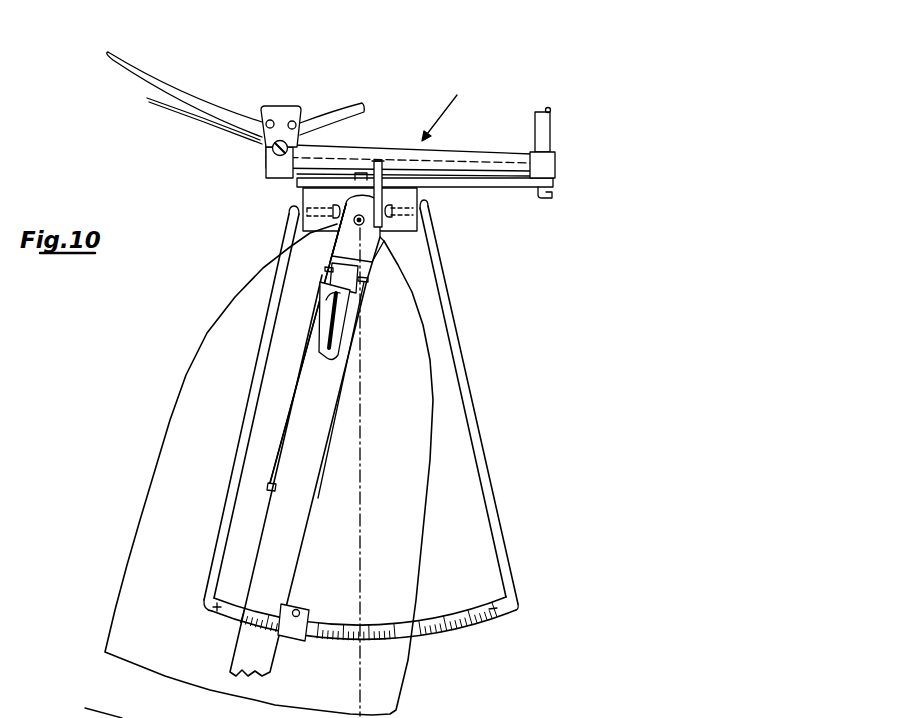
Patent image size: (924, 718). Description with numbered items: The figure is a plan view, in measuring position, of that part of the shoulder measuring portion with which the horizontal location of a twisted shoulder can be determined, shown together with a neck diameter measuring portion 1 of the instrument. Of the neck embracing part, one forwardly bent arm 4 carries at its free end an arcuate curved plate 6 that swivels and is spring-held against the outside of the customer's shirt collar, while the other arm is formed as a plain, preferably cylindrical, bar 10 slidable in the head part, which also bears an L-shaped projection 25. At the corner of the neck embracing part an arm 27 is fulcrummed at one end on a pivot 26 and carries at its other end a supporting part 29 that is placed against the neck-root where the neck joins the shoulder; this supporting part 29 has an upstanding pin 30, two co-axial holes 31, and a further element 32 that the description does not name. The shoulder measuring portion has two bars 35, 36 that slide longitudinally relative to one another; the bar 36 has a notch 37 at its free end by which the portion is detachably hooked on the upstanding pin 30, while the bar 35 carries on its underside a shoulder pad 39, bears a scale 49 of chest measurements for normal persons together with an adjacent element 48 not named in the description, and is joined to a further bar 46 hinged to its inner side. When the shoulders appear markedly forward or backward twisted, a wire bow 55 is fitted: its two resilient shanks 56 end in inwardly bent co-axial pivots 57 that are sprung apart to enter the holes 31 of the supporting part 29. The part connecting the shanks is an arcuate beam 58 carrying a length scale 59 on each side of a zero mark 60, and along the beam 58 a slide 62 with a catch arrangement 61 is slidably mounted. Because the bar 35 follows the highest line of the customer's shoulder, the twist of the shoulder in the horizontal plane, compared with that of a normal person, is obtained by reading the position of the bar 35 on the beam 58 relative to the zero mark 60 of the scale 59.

The neck diameter measuring portion 1 is at (448, 105).
The forwardly bent arm 4 is at (470, 152).
The arcuate curved plate 6 is at (320, 117).
The plain bar 10 is at (548, 133).
The L-shaped projection 25 is at (273, 106).
The pivot 26 is at (552, 198).
The arm 27 is at (522, 188).
The supporting part 29 is at (313, 200).
The upstanding pin 30 is at (372, 240).
The co-axial holes 31 is at (327, 228).
The pivot 32 is at (366, 224).
The bar 35 is at (275, 502).
The bar 36 is at (362, 258).
The notch 37 is at (362, 216).
The shoulder pad 39 is at (162, 630).
The bar 46 is at (333, 331).
The guide strip 48 is at (232, 343).
The scale 49 is at (293, 393).
The wire bow 55 is at (200, 583).
The resilient shanks 56 is at (243, 432).
The co-axial pivots 57 is at (300, 213).
The arcuate beam 58 is at (412, 637).
The length scale 59 is at (428, 633).
The zero mark 60 is at (353, 630).
The catch arrangement 61 is at (297, 610).
The slide 62 is at (295, 633).